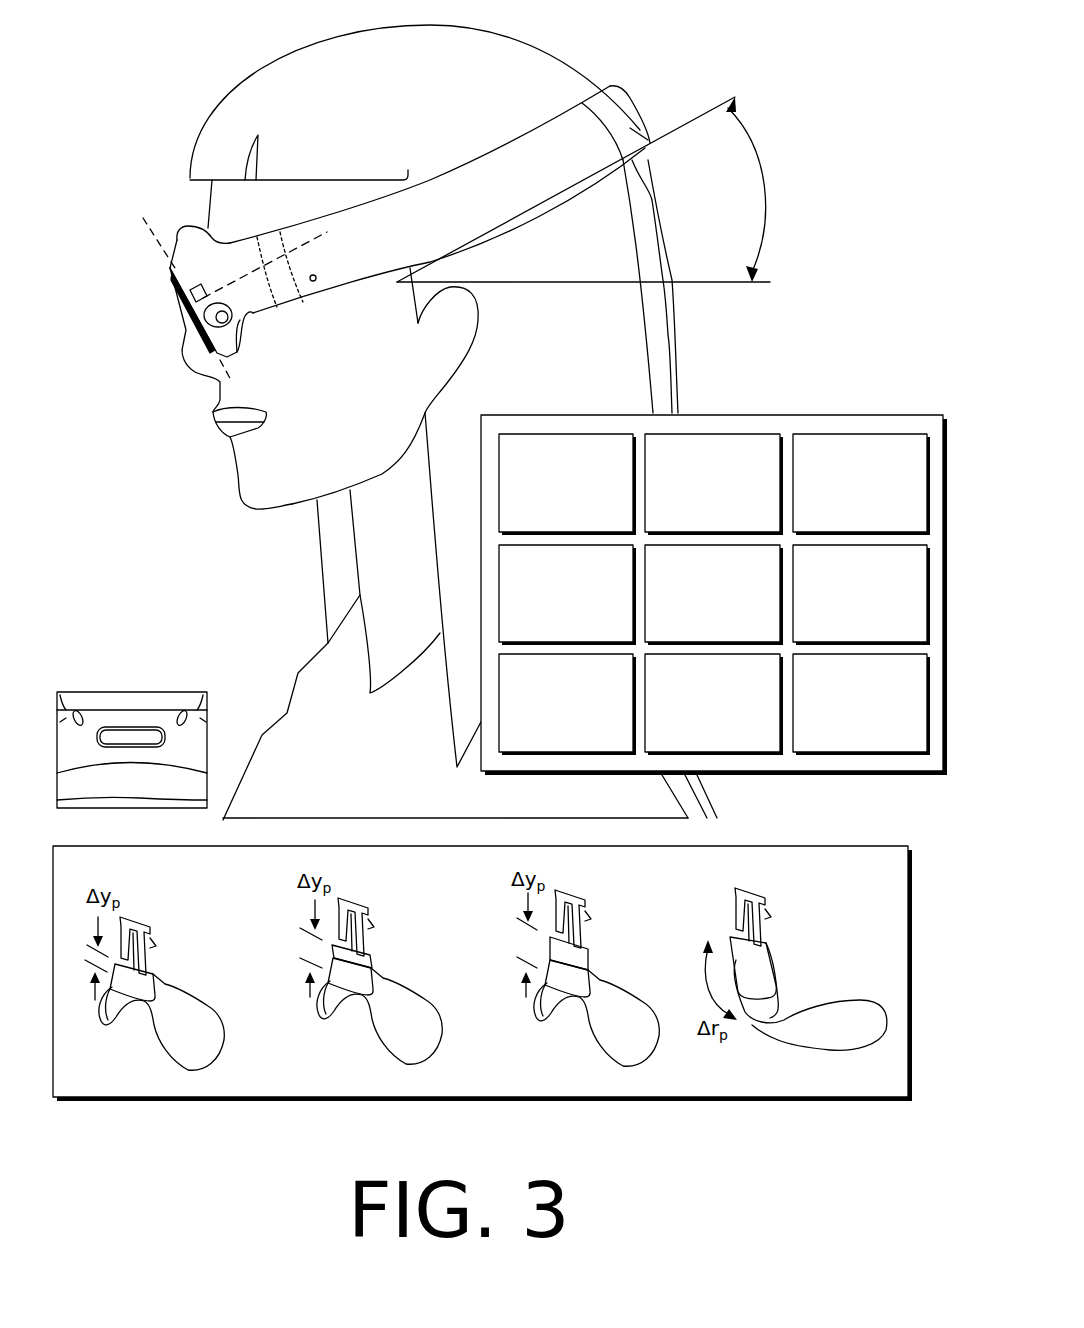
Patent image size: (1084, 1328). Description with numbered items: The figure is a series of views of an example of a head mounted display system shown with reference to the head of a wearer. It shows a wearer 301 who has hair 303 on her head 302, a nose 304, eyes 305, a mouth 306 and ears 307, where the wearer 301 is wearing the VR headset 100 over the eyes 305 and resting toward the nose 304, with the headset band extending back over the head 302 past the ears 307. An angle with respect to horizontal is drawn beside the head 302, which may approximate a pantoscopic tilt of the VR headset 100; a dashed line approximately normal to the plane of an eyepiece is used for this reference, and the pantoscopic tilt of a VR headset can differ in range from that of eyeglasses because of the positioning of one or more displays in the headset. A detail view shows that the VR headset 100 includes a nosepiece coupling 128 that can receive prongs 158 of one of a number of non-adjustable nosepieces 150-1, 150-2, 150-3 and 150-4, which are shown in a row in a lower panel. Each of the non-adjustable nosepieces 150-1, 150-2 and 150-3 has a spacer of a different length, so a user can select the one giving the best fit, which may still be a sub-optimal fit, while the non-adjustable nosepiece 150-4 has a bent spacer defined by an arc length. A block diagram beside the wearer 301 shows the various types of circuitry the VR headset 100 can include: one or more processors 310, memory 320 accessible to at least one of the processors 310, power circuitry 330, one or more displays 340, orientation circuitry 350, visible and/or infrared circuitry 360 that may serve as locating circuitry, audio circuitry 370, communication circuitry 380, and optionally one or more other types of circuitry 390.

The wearer 301 is at (226, 50).
The head 302 is at (510, 68).
The hair 303 is at (380, 115).
The VR headset 100 is at (152, 200).
The eyes 305 is at (152, 294).
The nose 304 is at (170, 333).
The mouth 306 is at (204, 431).
The ears 307 is at (407, 362).
The nosepiece coupling 128 is at (120, 748).
The processors 310 is at (567, 484).
The memory 320 is at (714, 484).
The power circuitry 330 is at (861, 484).
The displays 340 is at (567, 595).
The orientation circuitry 350 is at (714, 595).
The visible and/or infrared (IR) circuitry 360 is at (861, 595).
The audio circuitry 370 is at (567, 704).
The communication circuitry 380 is at (714, 704).
The other types of circuitry 390 is at (861, 704).
The prongs 158 is at (150, 922).
The non-adjustable nosepiece 150-1 is at (175, 1000).
The non-adjustable nosepiece 150-2 is at (385, 992).
The non-adjustable nosepiece 150-3 is at (601, 992).
The non-adjustable nosepiece 150-4 is at (796, 1006).